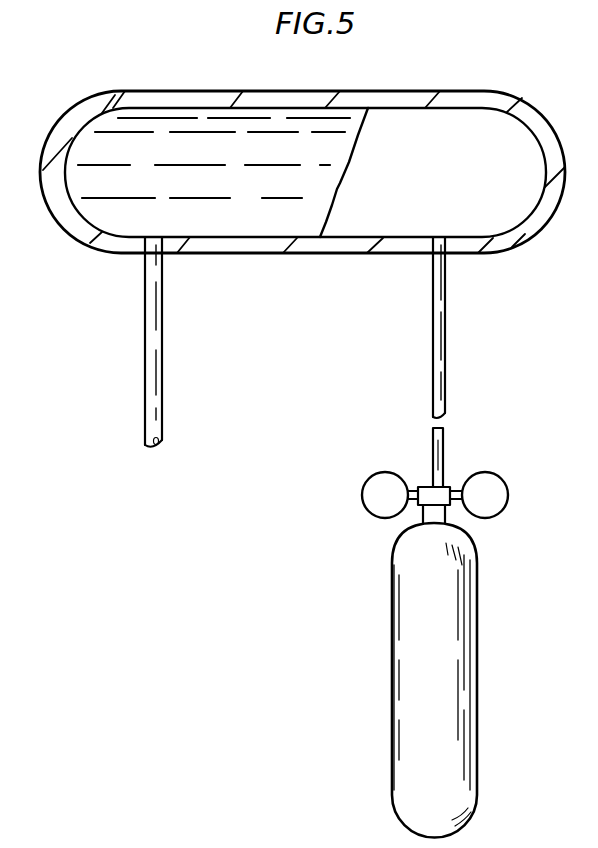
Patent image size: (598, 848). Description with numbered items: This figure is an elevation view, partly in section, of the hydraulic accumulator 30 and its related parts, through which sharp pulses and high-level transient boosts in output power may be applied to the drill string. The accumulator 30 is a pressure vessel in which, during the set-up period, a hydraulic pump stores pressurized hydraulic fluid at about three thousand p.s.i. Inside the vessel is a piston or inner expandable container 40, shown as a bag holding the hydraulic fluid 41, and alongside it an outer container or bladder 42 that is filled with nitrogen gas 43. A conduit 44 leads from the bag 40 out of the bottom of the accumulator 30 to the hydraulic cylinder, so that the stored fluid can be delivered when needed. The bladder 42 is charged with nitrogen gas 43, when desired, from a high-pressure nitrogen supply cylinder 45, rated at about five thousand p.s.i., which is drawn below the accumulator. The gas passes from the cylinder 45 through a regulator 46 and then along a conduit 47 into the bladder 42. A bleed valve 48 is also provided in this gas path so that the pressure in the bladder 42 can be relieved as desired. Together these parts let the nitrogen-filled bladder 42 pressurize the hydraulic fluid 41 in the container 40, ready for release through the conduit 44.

The hydraulic accumulator 30 is at (158, 80).
The inner expandable container 40 is at (299, 240).
The hydraulic fluid 41 is at (287, 189).
The bladder 42 is at (402, 228).
The nitrogen gas 43 is at (450, 162).
The conduit 44 is at (150, 372).
The nitrogen supply cylinder 45 is at (442, 602).
The regulator 46 is at (463, 476).
The conduit 47 is at (446, 362).
The bleed valve 48 is at (447, 487).